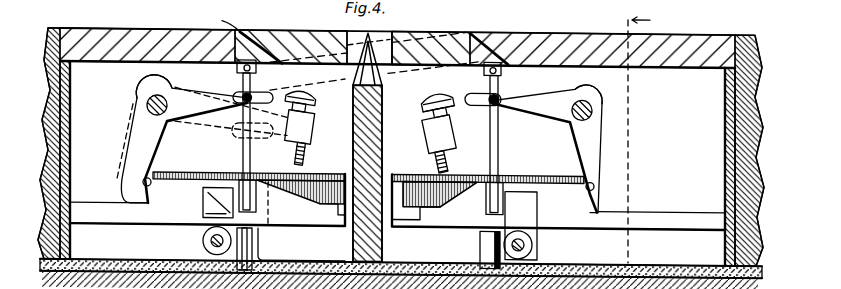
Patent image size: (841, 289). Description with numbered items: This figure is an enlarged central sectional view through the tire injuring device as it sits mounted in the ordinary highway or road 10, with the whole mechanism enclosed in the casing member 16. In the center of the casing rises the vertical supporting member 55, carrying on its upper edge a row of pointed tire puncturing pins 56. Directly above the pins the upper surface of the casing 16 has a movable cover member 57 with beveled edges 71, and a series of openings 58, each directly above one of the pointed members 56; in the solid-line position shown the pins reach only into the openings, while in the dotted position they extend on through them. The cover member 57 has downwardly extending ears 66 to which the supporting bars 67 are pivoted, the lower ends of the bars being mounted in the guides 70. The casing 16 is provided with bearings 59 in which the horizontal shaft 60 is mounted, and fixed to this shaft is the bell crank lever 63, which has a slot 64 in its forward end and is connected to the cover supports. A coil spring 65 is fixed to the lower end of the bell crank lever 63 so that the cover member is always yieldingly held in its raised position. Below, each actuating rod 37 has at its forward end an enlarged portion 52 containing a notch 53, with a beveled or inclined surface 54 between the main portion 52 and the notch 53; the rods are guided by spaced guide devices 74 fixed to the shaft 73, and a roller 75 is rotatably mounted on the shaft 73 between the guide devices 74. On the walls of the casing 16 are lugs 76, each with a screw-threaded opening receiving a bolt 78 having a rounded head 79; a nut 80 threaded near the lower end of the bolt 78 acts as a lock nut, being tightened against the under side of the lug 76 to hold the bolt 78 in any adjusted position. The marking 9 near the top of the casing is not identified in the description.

The highway or road 10 is at (58, 28).
The casing member 16 is at (84, 34).
The beveled edges of cover member 71 is at (512, 16).
The movable cover member 57 is at (292, 33).
The openings 58 is at (385, 28).
The section line 9 is at (629, 138).
The vertical supporting member 55 is at (381, 96).
The pointed or tire puncturing pins 56 is at (374, 72).
The ears 66 is at (237, 67).
The supporting bars 67 is at (243, 150).
The slot 64 is at (268, 104).
The bell crank lever 63 is at (157, 135).
The horizontal shaft 60 is at (157, 94).
The bearings 59 is at (137, 104).
The lugs 76 is at (371, 121).
The nut 80 is at (311, 145).
The bolt 78 is at (428, 154).
The rounded head 79 is at (444, 95).
The coil spring 65 is at (320, 176).
The notch 53 is at (310, 214).
The beveled or inclined surface 54 is at (270, 205).
The enlarged portion 52 is at (397, 204).
The actuating rods 37 is at (110, 222).
The guide devices 74 is at (205, 212).
The roller 75 is at (204, 243).
The shaft 73 is at (533, 243).
The guides 70 is at (253, 245).